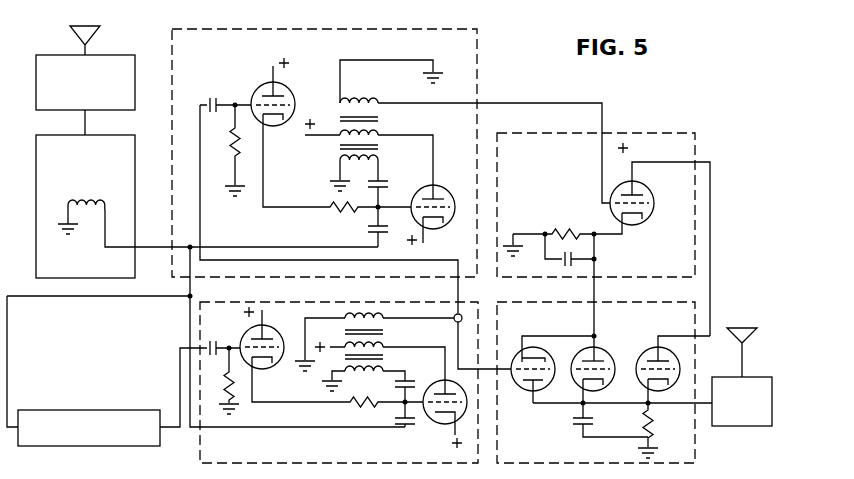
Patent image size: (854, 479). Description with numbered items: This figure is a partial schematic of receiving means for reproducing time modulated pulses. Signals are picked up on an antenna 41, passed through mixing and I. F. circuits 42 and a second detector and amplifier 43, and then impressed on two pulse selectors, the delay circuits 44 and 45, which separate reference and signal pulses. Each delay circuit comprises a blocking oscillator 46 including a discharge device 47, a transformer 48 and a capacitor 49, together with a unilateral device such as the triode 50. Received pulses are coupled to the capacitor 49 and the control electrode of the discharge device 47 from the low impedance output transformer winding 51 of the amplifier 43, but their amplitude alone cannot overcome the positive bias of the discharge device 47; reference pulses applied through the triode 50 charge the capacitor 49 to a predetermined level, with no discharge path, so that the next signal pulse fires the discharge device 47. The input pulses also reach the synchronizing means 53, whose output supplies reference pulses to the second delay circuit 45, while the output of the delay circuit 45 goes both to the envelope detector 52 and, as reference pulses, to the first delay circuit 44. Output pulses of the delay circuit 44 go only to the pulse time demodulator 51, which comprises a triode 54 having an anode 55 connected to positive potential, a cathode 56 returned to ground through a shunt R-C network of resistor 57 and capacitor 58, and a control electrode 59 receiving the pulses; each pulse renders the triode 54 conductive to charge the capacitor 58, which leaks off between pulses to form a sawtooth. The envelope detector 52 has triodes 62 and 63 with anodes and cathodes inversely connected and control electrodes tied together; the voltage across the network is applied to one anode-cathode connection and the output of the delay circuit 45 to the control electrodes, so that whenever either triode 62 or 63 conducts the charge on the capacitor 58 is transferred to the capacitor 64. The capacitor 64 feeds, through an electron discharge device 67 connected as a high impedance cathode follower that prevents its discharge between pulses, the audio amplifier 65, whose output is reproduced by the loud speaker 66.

The antenna 41 is at (96, 36).
The mixing and I. F. circuits 42 is at (135, 82).
The second detector and amplifier 43 is at (135, 184).
The delay circuit 44 is at (480, 50).
The delay circuit 45 is at (276, 302).
The blocking oscillator 46 is at (332, 172).
The discharge device 47 is at (468, 186).
The transformer 48 is at (425, 129).
The capacitor 49 is at (388, 186).
The triode 50 is at (314, 93).
The pulse time demodulator 51 is at (92, 215).
The envelope detector 52 is at (695, 432).
The synchronizing means 53 is at (88, 410).
The triode 54 is at (665, 185).
The anode 55 is at (628, 194).
The cathode 56 is at (640, 218).
The resistor 57 is at (548, 233).
The capacitor 58 is at (576, 260).
The control electrode 59 is at (655, 204).
The triode 62 is at (627, 352).
The triode 63 is at (528, 407).
The capacitor 64 is at (580, 424).
The audio amplifier 65 is at (762, 377).
The loud speaker 66 is at (750, 330).
The electron discharge device 67 is at (695, 356).